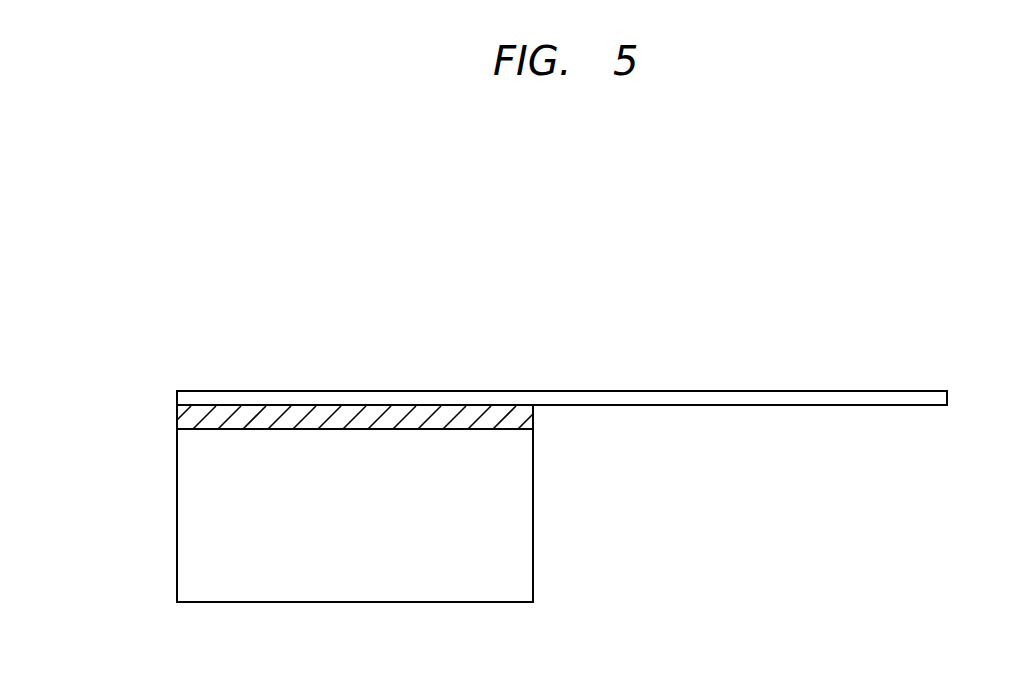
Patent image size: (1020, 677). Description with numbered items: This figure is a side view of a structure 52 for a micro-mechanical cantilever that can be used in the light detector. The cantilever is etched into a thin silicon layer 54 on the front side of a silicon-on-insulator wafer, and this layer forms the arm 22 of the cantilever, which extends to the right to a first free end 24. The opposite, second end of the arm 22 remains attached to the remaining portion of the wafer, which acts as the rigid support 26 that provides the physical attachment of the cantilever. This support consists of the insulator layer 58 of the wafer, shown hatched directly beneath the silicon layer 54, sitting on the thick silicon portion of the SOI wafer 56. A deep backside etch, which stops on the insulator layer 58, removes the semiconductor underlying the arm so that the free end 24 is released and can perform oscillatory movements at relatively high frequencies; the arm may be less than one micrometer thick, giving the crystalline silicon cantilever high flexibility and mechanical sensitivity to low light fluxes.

The arm 22 is at (683, 405).
The first free end 24 is at (808, 390).
The rigid support 26 is at (281, 489).
The structure 52 is at (272, 268).
The silicon layer 54 is at (388, 391).
The silicon portion of the SOI wafer 56 is at (347, 532).
The insulator layer 58 is at (178, 414).